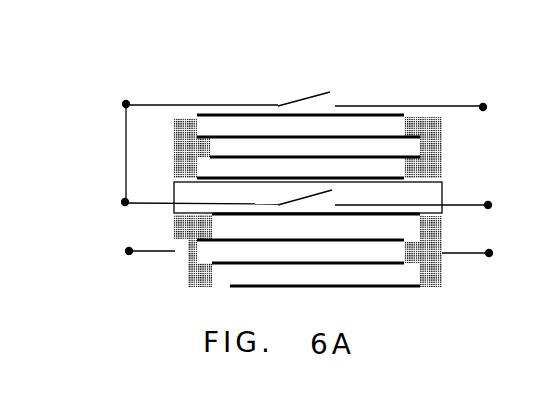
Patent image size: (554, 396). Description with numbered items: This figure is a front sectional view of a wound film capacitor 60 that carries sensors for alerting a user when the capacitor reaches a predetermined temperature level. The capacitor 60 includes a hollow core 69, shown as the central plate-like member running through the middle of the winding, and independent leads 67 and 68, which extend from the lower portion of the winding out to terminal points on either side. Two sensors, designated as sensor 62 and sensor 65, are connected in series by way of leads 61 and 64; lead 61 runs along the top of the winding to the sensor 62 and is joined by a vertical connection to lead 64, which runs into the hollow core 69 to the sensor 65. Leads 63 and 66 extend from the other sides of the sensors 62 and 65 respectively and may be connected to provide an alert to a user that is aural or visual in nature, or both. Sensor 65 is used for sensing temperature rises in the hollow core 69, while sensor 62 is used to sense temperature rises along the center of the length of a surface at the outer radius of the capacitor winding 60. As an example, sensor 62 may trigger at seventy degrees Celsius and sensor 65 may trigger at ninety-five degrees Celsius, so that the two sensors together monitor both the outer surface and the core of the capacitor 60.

The capacitor 60 is at (188, 78).
The lead 61 is at (126, 104).
The sensor 62 is at (307, 90).
The lead 63 is at (483, 104).
The lead 64 is at (125, 202).
The sensor 65 is at (320, 206).
The lead 66 is at (488, 203).
The independent lead 67 is at (129, 254).
The independent lead 68 is at (492, 261).
The hollow core 69 is at (173, 190).